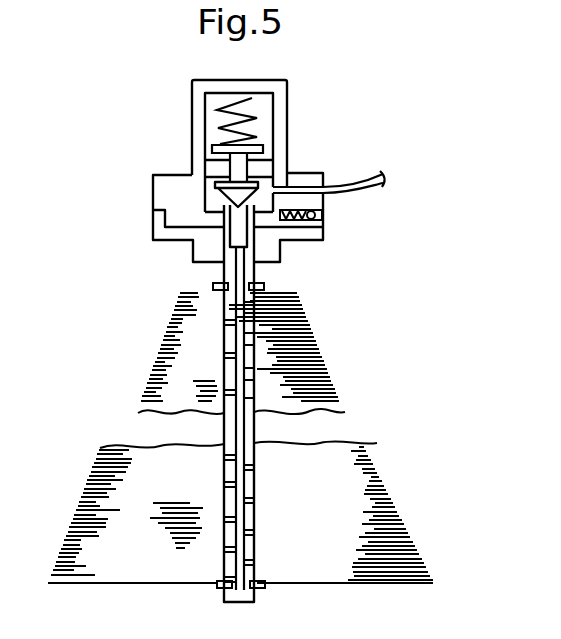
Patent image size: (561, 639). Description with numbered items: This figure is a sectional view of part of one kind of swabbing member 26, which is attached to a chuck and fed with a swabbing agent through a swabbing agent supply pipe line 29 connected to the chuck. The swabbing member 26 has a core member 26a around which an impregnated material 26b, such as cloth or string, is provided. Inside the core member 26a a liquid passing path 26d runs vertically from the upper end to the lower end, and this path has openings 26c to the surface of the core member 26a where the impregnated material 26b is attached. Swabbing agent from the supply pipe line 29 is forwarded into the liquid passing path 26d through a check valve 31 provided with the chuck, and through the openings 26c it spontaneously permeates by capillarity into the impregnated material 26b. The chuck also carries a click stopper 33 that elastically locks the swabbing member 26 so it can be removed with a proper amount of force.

The swabbing member 26 is at (272, 433).
The core member 26a is at (254, 347).
The impregnated material 26b is at (385, 475).
The openings 26c is at (223, 350).
The liquid passing path 26d is at (250, 356).
The swabbing agent supply pipe line 29 is at (368, 190).
The check valve 31 is at (258, 147).
The click stopper 33 is at (312, 216).